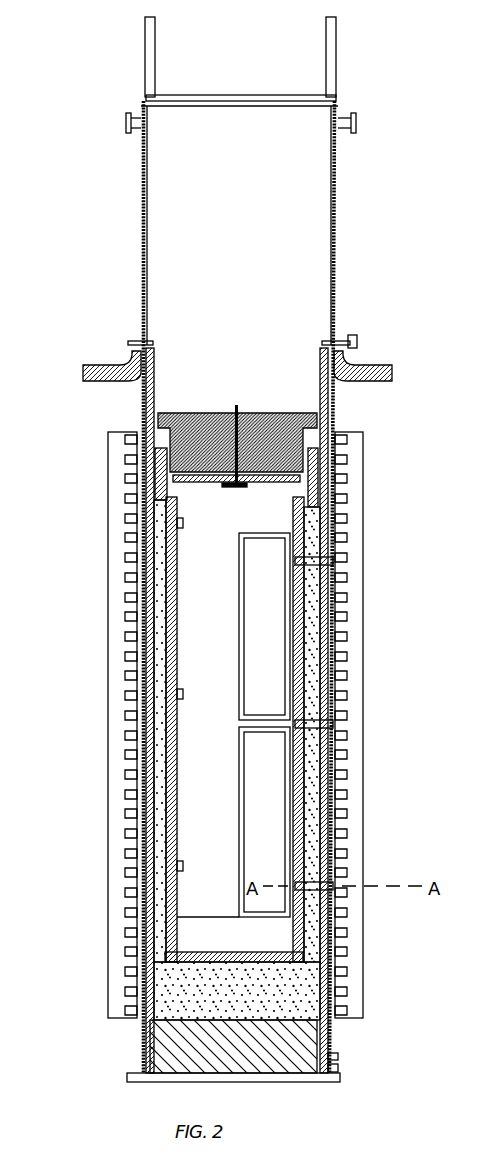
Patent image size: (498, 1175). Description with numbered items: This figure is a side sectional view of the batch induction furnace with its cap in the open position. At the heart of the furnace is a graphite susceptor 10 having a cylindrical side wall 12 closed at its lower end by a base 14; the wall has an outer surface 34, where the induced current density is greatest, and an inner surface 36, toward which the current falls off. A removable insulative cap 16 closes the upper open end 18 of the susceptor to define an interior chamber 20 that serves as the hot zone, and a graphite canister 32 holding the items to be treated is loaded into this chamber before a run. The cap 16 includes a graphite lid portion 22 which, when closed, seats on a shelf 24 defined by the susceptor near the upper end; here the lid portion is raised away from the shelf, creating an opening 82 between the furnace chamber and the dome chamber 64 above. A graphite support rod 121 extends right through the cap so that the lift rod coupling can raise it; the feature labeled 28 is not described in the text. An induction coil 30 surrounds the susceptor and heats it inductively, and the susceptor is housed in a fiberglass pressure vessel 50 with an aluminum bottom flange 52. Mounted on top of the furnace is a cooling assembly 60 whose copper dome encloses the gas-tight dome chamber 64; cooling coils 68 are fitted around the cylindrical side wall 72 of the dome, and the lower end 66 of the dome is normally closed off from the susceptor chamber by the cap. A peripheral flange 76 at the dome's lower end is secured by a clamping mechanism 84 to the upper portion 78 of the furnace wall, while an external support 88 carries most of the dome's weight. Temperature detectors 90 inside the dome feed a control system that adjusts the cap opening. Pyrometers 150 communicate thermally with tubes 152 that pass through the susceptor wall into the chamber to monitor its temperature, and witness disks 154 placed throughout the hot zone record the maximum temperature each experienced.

The susceptor 10 is at (168, 598).
The cylindrical side wall 12 is at (168, 640).
The base 14 is at (185, 967).
The removable insulative cap 16 is at (300, 420).
The upper open end 18 is at (192, 500).
The interior chamber 20 is at (222, 656).
The lid portion 22 is at (300, 505).
The shelf 24 is at (170, 508).
The notch in heater block 28 is at (167, 428).
The induction coil 30 is at (130, 767).
The canister 32 is at (238, 735).
The outer surface 34 is at (170, 800).
The inner surface 36 is at (175, 810).
The pressure vessel 50 is at (145, 1042).
The bottom flange 52 is at (310, 1080).
The cooling assembly 60 is at (141, 262).
The dome chamber 64 is at (245, 222).
The lower end of the dome 66 is at (168, 345).
The cooling coils 68 is at (338, 222).
The cylindrical side wall of the dome 72 is at (143, 296).
The peripheral flange 76 is at (350, 338).
The upper portion of the furnace wall 78 is at (330, 395).
The opening 82 is at (322, 420).
The clamping mechanism 84 is at (357, 340).
The external support 88 is at (110, 365).
The temperature detectors 90 is at (337, 171).
The graphite support rod 121 is at (232, 423).
The pyrometers 150 is at (333, 561).
The tubes 152 is at (308, 728).
The witness disks 154 is at (183, 524).